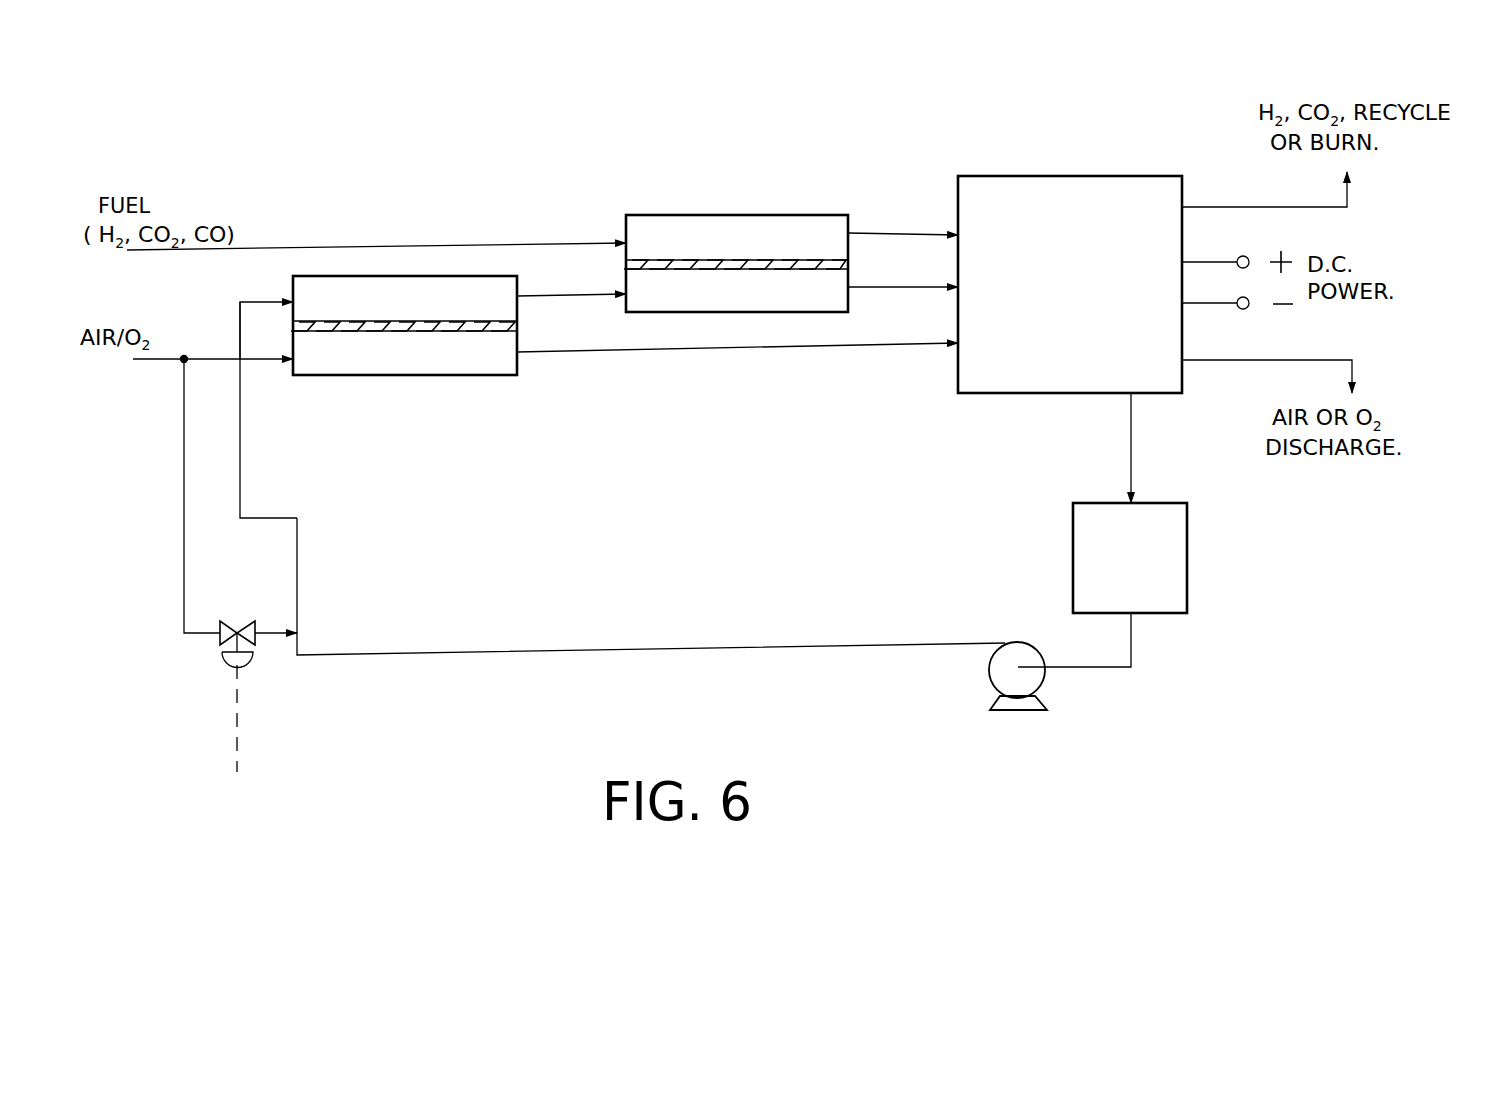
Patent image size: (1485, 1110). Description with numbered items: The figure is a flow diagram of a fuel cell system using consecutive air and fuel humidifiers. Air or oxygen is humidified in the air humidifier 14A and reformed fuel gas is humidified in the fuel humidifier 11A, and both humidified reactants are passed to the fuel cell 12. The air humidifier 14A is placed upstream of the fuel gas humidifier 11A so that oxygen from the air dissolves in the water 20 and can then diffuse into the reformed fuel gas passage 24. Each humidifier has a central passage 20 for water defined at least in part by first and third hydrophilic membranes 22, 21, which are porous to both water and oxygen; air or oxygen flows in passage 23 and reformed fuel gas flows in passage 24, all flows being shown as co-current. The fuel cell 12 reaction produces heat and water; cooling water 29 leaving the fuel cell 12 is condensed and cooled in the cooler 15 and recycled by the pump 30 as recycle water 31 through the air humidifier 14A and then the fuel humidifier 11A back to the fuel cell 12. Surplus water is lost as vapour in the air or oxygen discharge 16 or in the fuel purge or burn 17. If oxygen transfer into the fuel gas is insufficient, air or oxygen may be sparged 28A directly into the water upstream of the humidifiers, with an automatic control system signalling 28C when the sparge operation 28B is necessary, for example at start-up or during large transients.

The fuel humidifier 11A is at (782, 214).
The fuel cell 12 is at (1070, 288).
The air humidifier 14A is at (382, 376).
The cooler 15 is at (1140, 571).
The air discharge 16 is at (1284, 369).
The fuel purge or burn 17 is at (1284, 195).
The central passage for water 20 is at (400, 310).
The third hydrophilic membrane 21 is at (483, 331).
The first hydrophilic membrane 22 is at (647, 268).
The air passage 23 is at (400, 368).
The reformed fuel gas passage 24 is at (733, 252).
The sparge 28A is at (173, 496).
The sparge operation valve 28B is at (257, 629).
The control signal 28C is at (271, 718).
The cooling water 29 is at (1114, 448).
The recycle pump 30 is at (992, 676).
The recycle water 31 is at (651, 601).